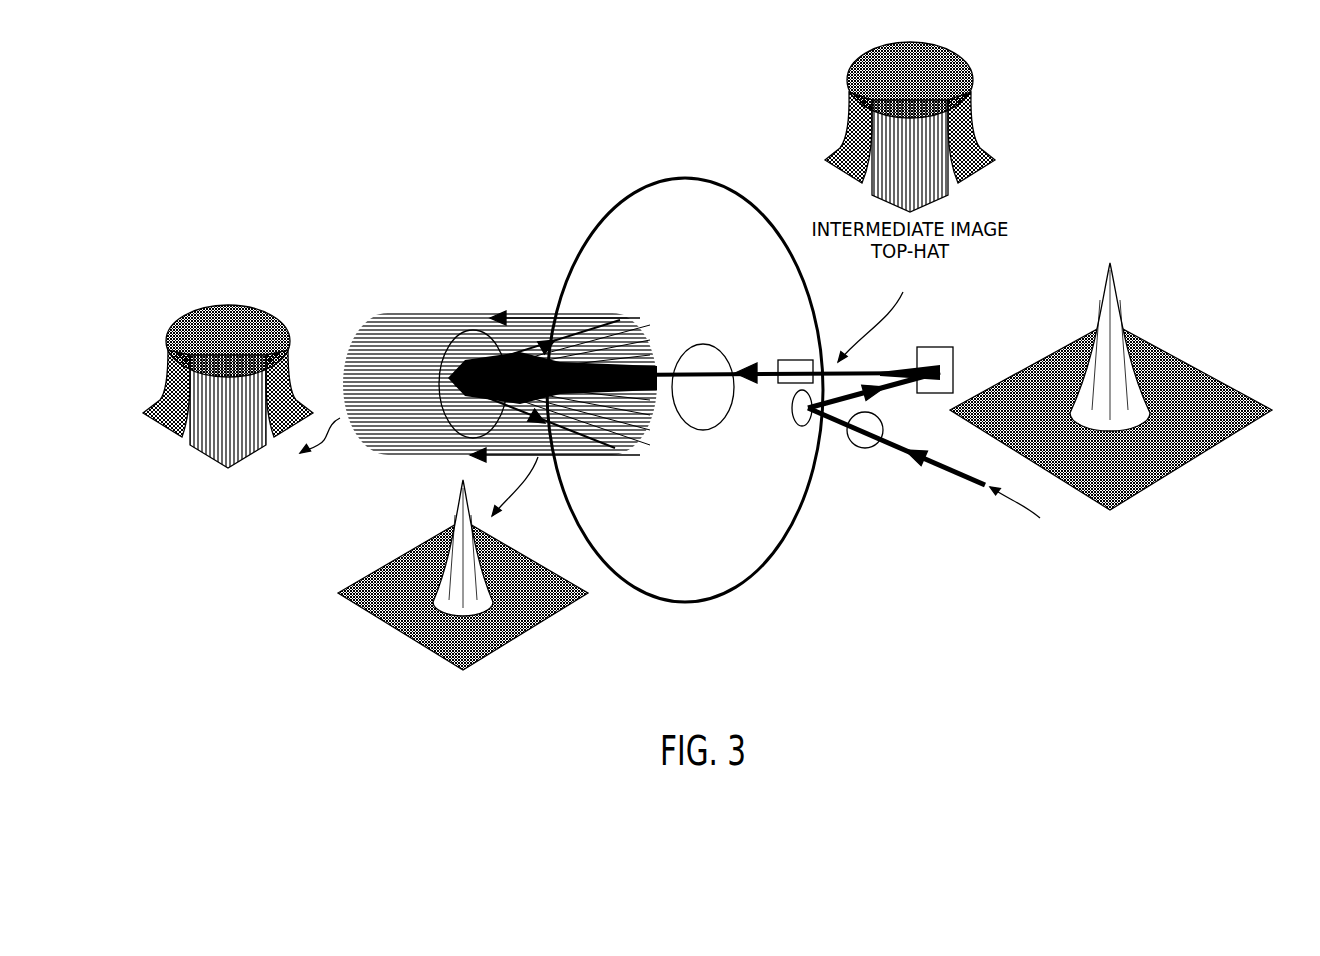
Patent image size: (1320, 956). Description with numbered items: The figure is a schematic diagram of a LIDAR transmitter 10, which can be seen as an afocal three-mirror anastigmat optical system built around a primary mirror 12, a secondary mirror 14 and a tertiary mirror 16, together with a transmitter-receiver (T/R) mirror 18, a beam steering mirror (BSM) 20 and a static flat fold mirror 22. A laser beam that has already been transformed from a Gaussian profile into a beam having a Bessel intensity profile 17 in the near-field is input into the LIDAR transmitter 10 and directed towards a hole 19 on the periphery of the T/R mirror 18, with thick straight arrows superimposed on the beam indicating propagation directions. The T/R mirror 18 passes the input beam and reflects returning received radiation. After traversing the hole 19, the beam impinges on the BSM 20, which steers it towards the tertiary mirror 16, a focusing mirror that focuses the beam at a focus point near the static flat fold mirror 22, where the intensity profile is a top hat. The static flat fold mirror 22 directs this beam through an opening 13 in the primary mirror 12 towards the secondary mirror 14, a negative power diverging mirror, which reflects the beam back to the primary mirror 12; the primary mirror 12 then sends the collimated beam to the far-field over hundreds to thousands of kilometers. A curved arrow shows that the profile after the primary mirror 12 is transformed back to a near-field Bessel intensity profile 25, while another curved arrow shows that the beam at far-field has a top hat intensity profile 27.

The LIDAR transmitter 10 is at (567, 130).
The primary mirror 12 is at (705, 178).
The opening 13 is at (697, 430).
The secondary mirror 14 is at (473, 330).
The tertiary mirror 16 is at (930, 347).
The Bessel intensity profile 17 is at (1212, 382).
The transmitter-receiver (T/R) mirror 18 is at (870, 447).
The hole 19 is at (866, 447).
The beam steering mirror (BSM) 20 is at (797, 425).
The static flat fold mirror 22 is at (792, 358).
The near-field Bessel intensity profile 25 is at (378, 612).
The far-field top-hat intensity profile 27 is at (222, 303).